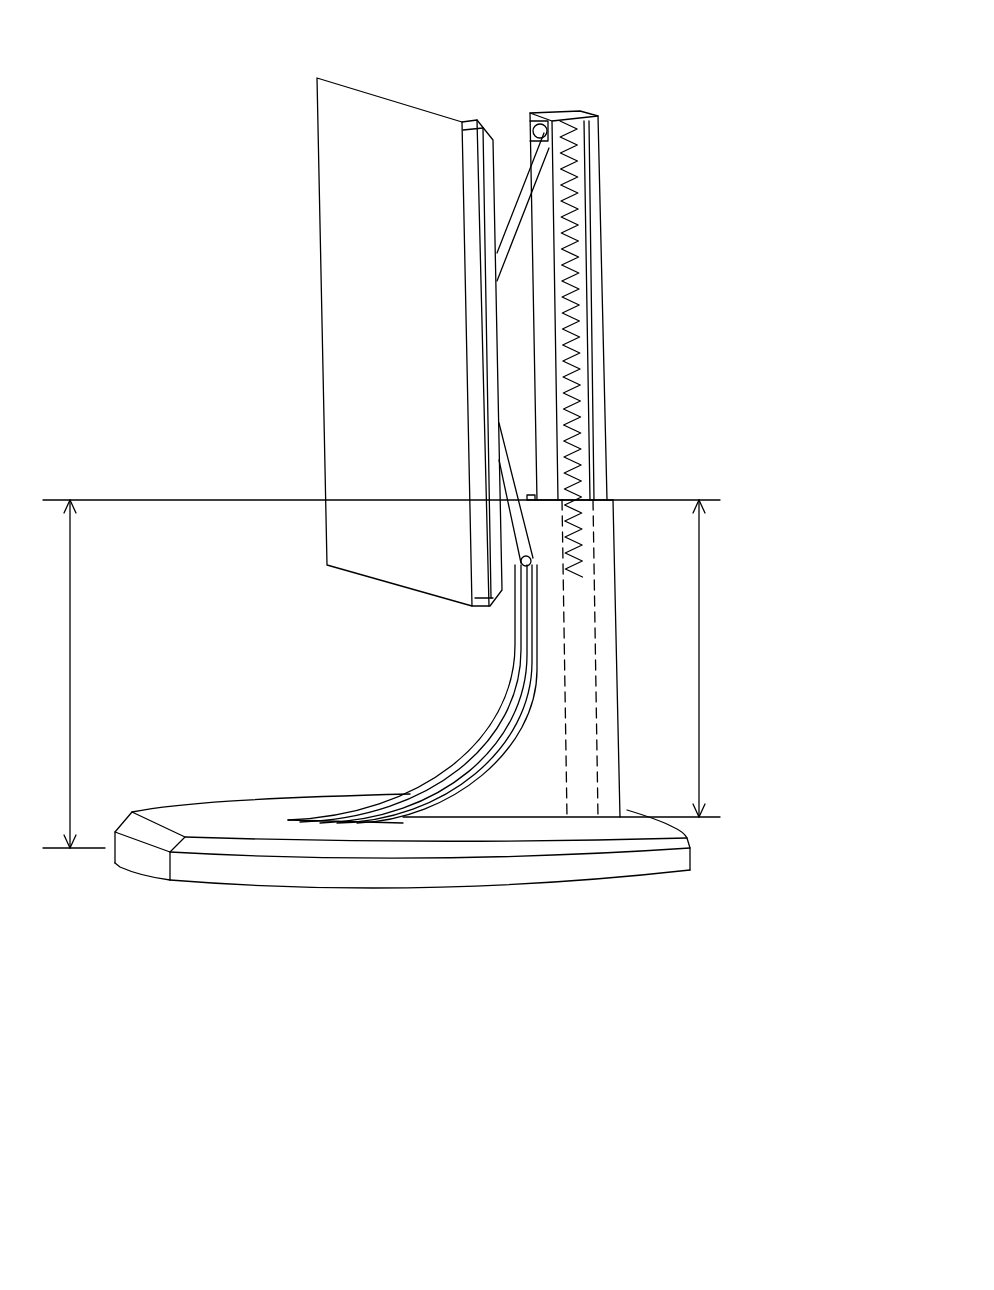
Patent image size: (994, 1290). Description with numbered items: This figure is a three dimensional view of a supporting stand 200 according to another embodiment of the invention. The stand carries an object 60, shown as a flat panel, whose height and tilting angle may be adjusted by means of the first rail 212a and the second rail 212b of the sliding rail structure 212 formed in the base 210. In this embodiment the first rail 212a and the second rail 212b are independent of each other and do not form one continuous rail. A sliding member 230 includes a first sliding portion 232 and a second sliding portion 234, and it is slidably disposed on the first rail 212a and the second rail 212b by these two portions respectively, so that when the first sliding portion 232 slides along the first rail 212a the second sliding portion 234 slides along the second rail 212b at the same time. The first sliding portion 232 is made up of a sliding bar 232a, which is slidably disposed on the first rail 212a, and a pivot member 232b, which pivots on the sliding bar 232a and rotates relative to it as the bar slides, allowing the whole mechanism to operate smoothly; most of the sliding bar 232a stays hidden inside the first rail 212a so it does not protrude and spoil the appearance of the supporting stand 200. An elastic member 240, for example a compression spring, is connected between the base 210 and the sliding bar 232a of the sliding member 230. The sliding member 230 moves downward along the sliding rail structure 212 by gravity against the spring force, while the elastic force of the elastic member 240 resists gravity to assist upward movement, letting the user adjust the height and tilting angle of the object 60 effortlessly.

The supporting stand 200 is at (817, 47).
The object 60 is at (330, 158).
The base 210 is at (510, 802).
The sliding rail structure 212 is at (417, 670).
The first rail 212a is at (698, 745).
The second rail 212b is at (70, 713).
The sliding member 230 is at (778, 245).
The first sliding portion 232 is at (708, 198).
The sliding bar 232a is at (597, 210).
The pivot member 232b is at (506, 257).
The second sliding portion 234 is at (508, 462).
The elastic member 240 is at (602, 137).